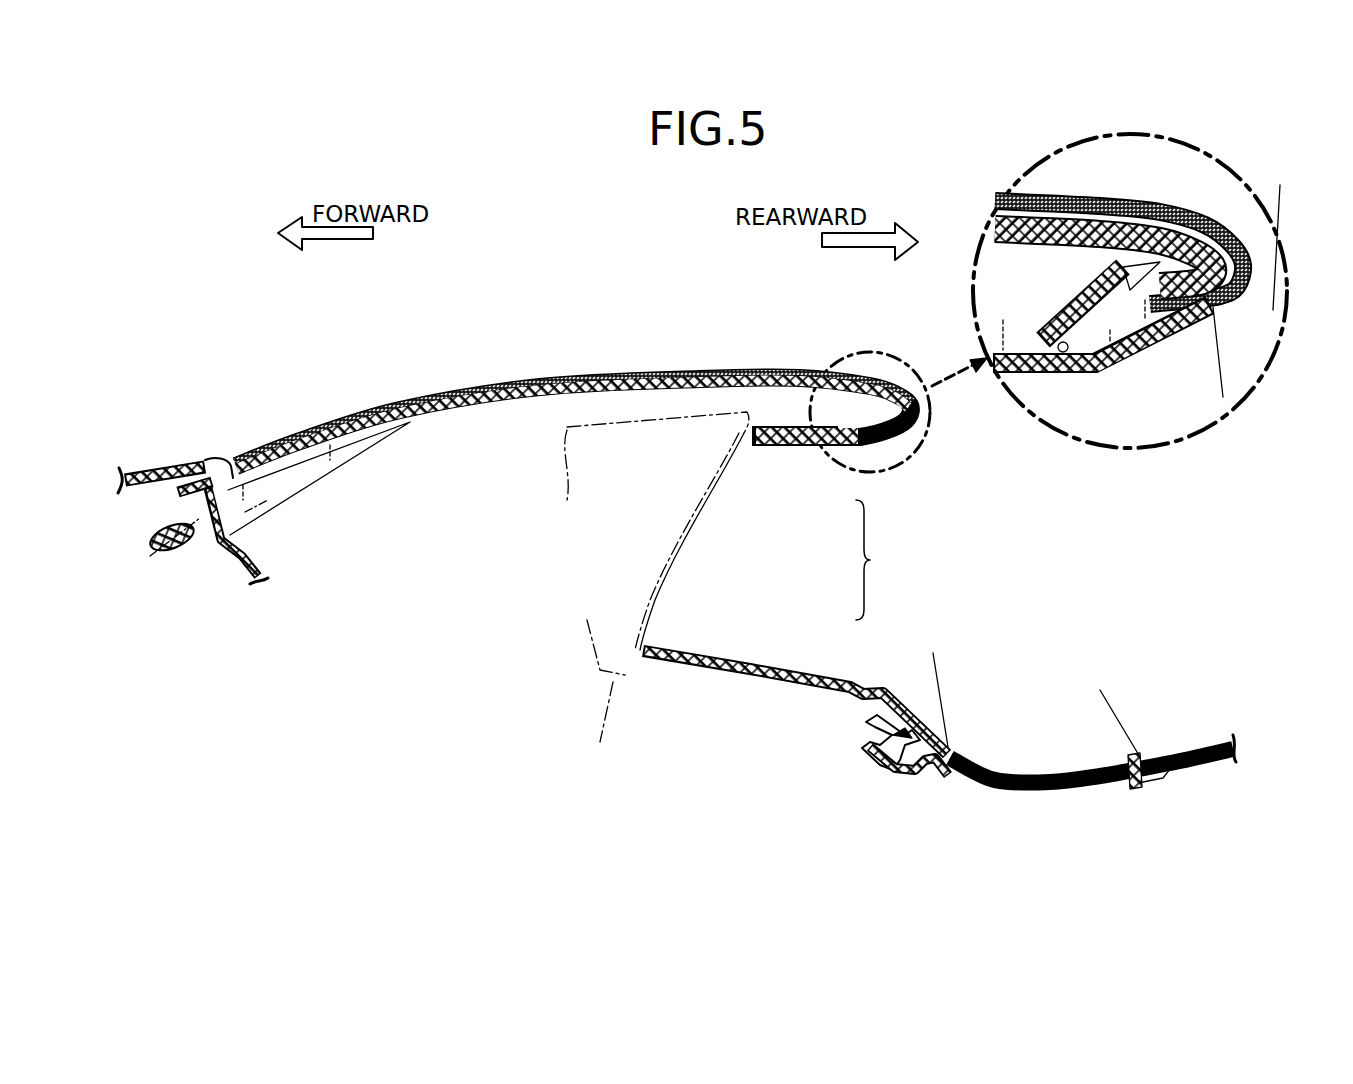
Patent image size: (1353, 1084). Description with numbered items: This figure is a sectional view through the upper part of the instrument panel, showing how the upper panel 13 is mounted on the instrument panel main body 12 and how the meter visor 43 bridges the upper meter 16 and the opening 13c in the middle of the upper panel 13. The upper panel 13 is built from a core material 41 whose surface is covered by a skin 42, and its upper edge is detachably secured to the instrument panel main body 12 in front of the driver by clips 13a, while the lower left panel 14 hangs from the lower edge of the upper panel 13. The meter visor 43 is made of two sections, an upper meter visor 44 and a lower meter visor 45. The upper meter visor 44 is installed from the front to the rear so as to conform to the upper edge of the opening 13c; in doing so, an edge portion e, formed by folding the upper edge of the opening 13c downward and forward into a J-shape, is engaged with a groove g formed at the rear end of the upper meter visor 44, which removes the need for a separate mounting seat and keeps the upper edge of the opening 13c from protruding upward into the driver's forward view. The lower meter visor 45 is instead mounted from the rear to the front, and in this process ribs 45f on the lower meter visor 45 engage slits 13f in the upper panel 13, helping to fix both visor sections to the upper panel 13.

The instrument panel main body 12 is at (163, 463).
The upper panel 13 is at (735, 488).
The clips 13a is at (188, 550).
The opening 13c is at (909, 392).
The slits 13f is at (897, 772).
The lower left panel 14 is at (1208, 740).
The upper meter 16 is at (653, 587).
The core material 41 is at (503, 417).
The skin 42 is at (540, 378).
The meter visor 43 is at (880, 560).
The upper meter visor 44 is at (787, 452).
The lower meter visor 45 is at (752, 655).
The ribs 45f is at (912, 755).
The edge portion e is at (1077, 297).
The groove g is at (1061, 353).